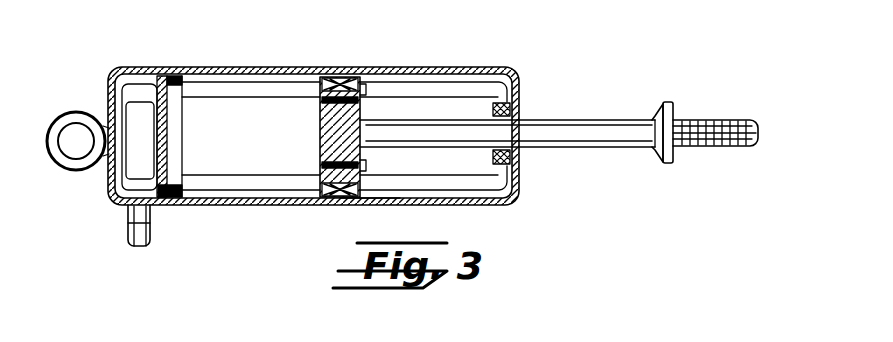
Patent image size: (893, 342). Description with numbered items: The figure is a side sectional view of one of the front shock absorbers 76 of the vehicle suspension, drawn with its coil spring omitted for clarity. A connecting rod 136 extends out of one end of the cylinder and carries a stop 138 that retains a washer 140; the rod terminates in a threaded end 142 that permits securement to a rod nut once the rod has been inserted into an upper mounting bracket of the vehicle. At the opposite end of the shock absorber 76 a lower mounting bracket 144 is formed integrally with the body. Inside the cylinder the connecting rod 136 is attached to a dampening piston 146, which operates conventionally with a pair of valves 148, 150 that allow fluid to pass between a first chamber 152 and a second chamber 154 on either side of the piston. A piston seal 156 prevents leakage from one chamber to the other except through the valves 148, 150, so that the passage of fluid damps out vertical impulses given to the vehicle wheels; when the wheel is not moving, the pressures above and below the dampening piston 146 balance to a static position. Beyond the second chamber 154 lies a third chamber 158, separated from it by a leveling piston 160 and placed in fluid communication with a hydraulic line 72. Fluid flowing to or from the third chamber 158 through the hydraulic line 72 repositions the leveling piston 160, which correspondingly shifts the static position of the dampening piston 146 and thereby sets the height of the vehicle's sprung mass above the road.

The hydraulic line 72 is at (150, 236).
The front shock absorber 76 is at (473, 52).
The connecting rod 136 is at (572, 127).
The stop 138 is at (658, 149).
The washer 140 is at (677, 165).
The threaded end 142 is at (733, 122).
The lower mounting bracket 144 is at (85, 168).
The dampening piston 146 is at (320, 130).
The valve 148 is at (314, 165).
The valve 150 is at (405, 44).
The first chamber 152 is at (480, 93).
The second chamber 154 is at (292, 91).
The piston seal 156 is at (342, 203).
The third chamber 158 is at (145, 93).
The leveling piston 160 is at (178, 207).